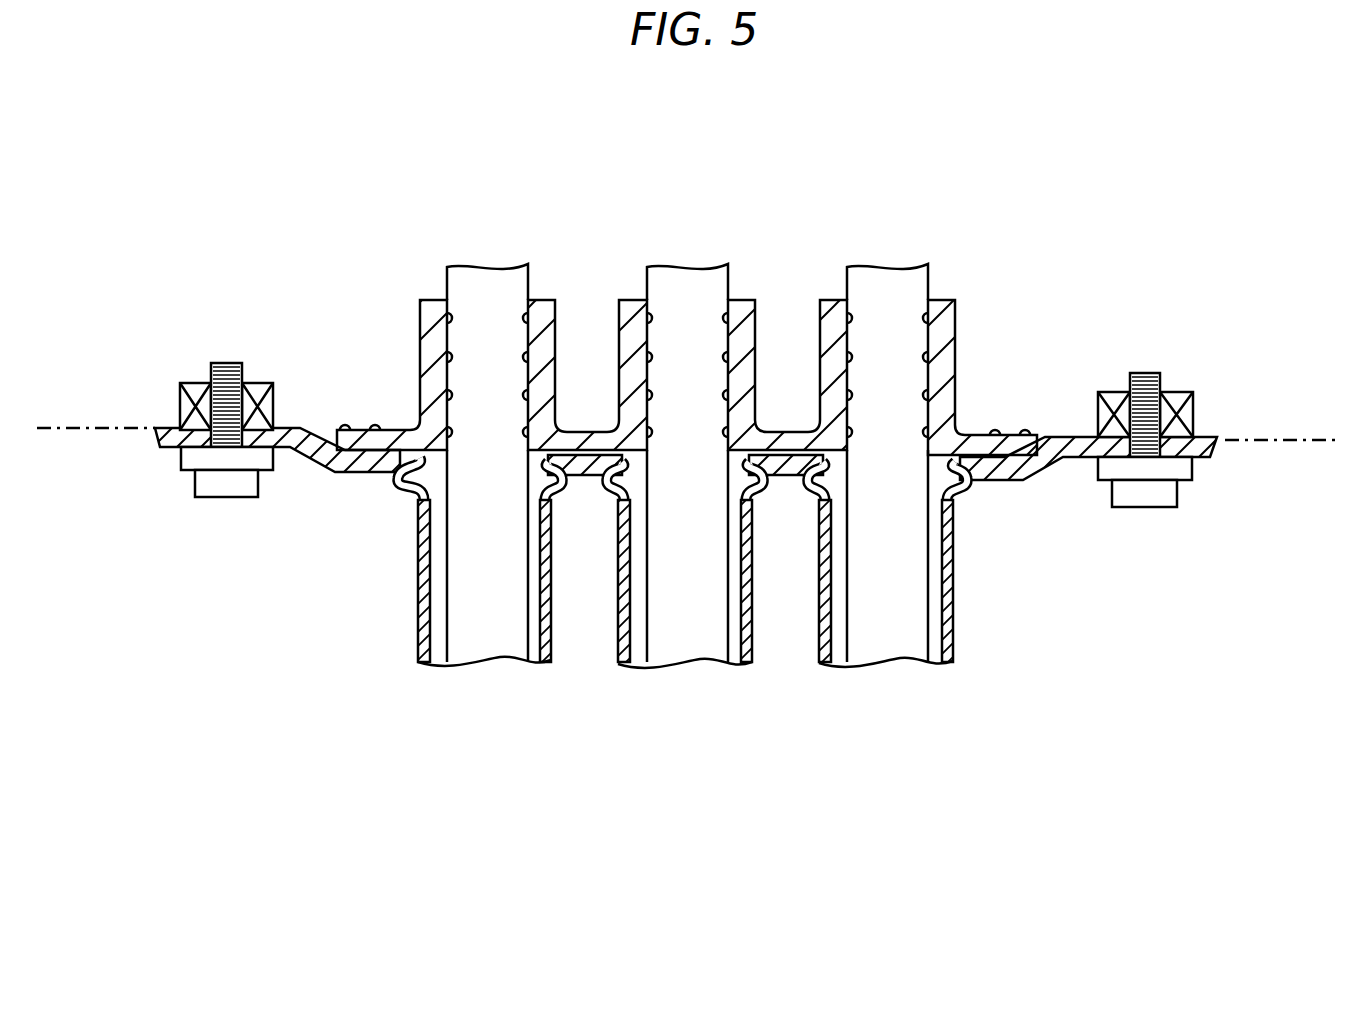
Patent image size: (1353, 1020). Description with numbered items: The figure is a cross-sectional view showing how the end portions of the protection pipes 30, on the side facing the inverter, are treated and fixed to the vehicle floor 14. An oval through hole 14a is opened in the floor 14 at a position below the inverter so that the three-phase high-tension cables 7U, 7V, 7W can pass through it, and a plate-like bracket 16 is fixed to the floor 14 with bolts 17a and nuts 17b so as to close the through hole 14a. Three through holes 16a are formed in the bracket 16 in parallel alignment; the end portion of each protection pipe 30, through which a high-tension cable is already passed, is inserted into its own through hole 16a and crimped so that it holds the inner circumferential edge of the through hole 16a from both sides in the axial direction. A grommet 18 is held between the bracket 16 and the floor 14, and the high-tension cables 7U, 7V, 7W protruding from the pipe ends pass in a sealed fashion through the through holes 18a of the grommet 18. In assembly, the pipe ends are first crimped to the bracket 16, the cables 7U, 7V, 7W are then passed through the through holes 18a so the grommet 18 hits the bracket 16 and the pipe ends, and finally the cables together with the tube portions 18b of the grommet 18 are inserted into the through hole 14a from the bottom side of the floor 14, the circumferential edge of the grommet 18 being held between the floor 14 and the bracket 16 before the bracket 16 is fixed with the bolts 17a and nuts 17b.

The floor 14 is at (100, 427).
The through hole 14a is at (383, 428).
The high-tension cable 7U is at (528, 285).
The high-tension cable 7V is at (728, 285).
The high-tension cable 7W is at (928, 285).
The grommet 18 is at (997, 435).
The through hole 18a is at (448, 302).
The tube portion 18b is at (555, 322).
The bracket 16 is at (1052, 475).
The through hole 16a is at (548, 495).
The bolt 17a is at (1147, 508).
The nut 17b is at (1170, 392).
The protection pipe 30 is at (552, 630).